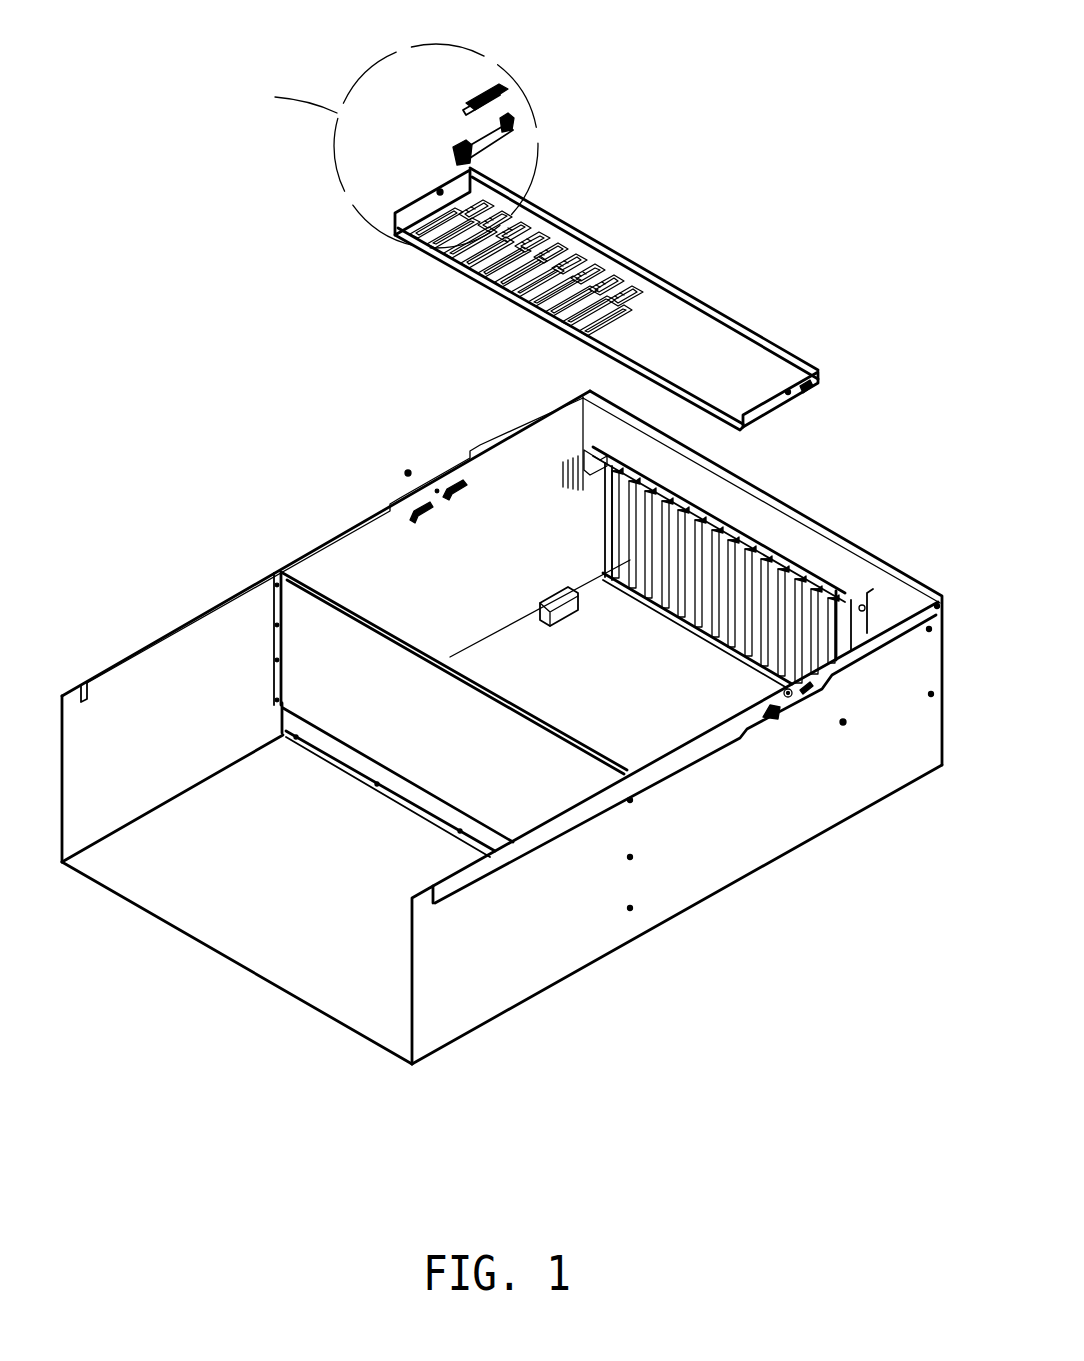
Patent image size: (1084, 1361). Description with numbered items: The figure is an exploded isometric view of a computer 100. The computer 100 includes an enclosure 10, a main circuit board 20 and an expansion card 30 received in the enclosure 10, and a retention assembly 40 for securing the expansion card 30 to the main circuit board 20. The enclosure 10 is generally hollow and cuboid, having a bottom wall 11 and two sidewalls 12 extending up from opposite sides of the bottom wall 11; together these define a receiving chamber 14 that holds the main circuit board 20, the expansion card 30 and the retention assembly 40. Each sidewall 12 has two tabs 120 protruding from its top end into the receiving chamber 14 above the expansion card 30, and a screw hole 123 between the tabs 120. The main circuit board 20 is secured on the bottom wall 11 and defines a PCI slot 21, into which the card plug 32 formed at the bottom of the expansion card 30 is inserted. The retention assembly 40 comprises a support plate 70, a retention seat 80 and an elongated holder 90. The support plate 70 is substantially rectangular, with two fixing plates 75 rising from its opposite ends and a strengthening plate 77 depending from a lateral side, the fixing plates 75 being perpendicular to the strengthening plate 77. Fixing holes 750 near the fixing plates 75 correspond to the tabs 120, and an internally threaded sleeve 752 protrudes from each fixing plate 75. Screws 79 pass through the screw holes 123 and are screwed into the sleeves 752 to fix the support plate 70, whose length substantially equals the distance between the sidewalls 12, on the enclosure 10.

The computer 100 is at (222, 448).
The enclosure 10 is at (735, 835).
The bottom wall 11 is at (292, 978).
The sidewall 12 is at (430, 992).
The receiving chamber 14 is at (350, 583).
The main circuit board 20 is at (655, 682).
The PCI slot 21 is at (544, 602).
The expansion card 30 is at (430, 610).
The card plug 32 is at (472, 487).
The retention assembly 40 is at (594, 62).
The support plate 70 is at (527, 205).
The fixing plate 75 is at (765, 408).
The strengthening plate 77 is at (567, 333).
The screw 79 is at (792, 697).
The retention seat 80 is at (513, 120).
The elongated holder 90 is at (507, 92).
The tab 120 is at (412, 508).
The screw hole 123 is at (846, 728).
The fixing hole 750 is at (808, 390).
The internally threaded sleeve 752 is at (440, 192).